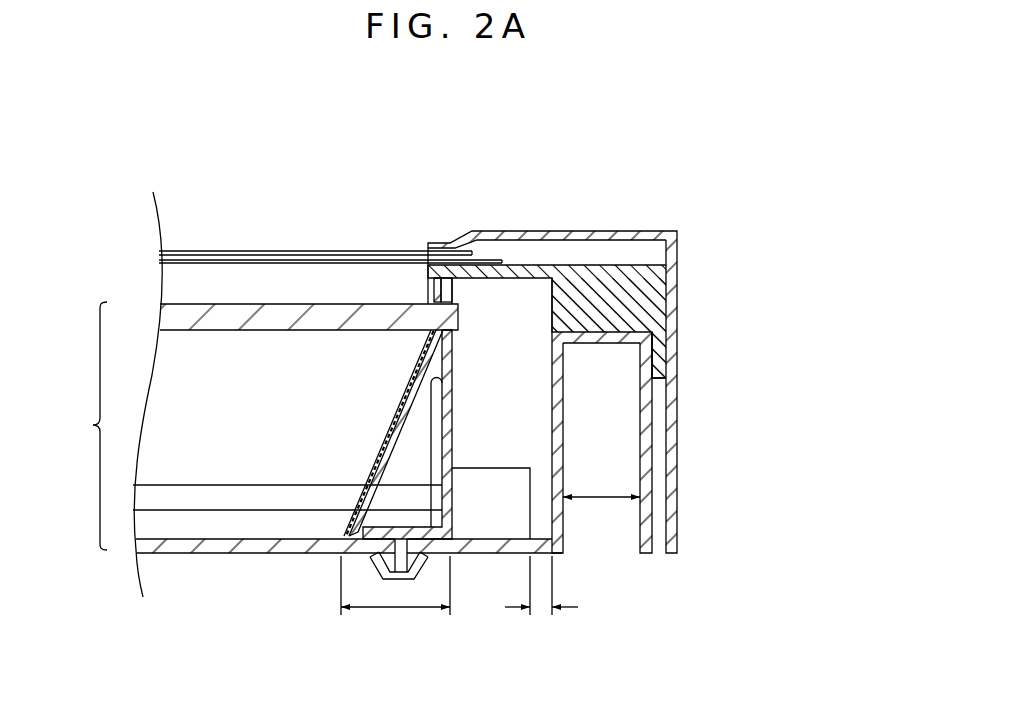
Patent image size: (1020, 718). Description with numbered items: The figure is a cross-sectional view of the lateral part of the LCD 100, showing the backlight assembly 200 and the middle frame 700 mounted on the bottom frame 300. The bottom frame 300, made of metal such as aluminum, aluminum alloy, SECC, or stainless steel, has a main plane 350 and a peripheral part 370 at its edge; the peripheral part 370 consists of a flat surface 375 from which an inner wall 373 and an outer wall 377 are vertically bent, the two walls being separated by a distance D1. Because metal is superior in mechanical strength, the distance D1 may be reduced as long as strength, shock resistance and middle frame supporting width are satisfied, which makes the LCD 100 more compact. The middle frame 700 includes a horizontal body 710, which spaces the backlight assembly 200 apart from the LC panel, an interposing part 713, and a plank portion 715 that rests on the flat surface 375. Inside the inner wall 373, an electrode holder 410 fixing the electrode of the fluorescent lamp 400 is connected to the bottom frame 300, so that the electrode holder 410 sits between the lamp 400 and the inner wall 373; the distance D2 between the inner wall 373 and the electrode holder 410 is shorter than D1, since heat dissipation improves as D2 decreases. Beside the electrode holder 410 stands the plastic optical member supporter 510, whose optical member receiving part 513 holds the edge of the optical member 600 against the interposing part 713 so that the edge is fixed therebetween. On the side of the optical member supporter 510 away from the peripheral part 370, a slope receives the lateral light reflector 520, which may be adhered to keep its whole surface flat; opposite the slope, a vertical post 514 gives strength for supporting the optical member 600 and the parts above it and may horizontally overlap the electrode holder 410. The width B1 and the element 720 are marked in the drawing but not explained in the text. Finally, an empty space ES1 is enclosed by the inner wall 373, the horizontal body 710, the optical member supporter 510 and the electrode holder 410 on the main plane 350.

The LCD 100 is at (412, 107).
The backlight assembly 200 is at (107, 394).
The bottom frame 300 is at (267, 550).
The main plane 350 is at (168, 556).
The fluorescent lamp 400 is at (222, 502).
The electrode holder 410 is at (483, 528).
The optical member supporter 510 is at (317, 555).
The optical member receiving part 513 is at (428, 363).
The vertical post 514 is at (450, 505).
The lateral light reflector 520 is at (378, 448).
The optical member 600 is at (262, 318).
The middle frame 700 is at (670, 256).
The horizontal body 710 is at (634, 285).
The interposing part 713 is at (440, 270).
The plank portion 715 is at (603, 313).
The frame extension 720 is at (660, 362).
The peripheral part 370 is at (652, 520).
The inner wall 373 is at (558, 428).
The flat surface 375 is at (642, 323).
The outer wall 377 is at (652, 484).
The empty space ES1 is at (515, 316).
The width B1 is at (395, 596).
The distance between inner and outer walls D1 is at (601, 510).
The distance between inner wall and electrode holder D2 is at (541, 597).